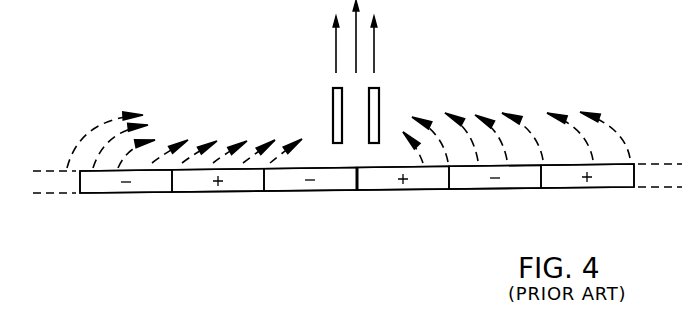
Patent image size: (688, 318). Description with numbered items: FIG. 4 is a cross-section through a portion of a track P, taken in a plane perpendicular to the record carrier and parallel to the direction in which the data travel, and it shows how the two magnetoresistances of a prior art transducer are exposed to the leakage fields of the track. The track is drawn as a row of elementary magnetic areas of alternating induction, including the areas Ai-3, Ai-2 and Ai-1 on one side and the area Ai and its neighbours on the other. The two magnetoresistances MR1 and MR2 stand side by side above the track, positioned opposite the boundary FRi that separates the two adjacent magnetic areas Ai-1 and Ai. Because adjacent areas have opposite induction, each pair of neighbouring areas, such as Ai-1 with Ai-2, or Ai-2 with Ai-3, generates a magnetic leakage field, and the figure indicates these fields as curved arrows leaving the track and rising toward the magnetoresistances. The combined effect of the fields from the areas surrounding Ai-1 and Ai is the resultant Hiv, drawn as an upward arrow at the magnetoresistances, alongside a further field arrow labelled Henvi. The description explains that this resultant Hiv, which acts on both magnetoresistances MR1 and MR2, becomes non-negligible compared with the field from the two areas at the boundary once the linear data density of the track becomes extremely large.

The magnetoresistance MR1 is at (333, 112).
The magnetoresistance MR2 is at (379, 115).
The magnetic area Ai-3 is at (125, 203).
The magnetic area Ai-2 is at (218, 203).
The magnetic area Ai-1 is at (310, 203).
The boundary FRi is at (353, 203).
The magnetic area Ai is at (403, 201).
The resultant of the magnetic leakage fields Hiv is at (320, 42).
The environmental magnetic field Henvi is at (404, 42).